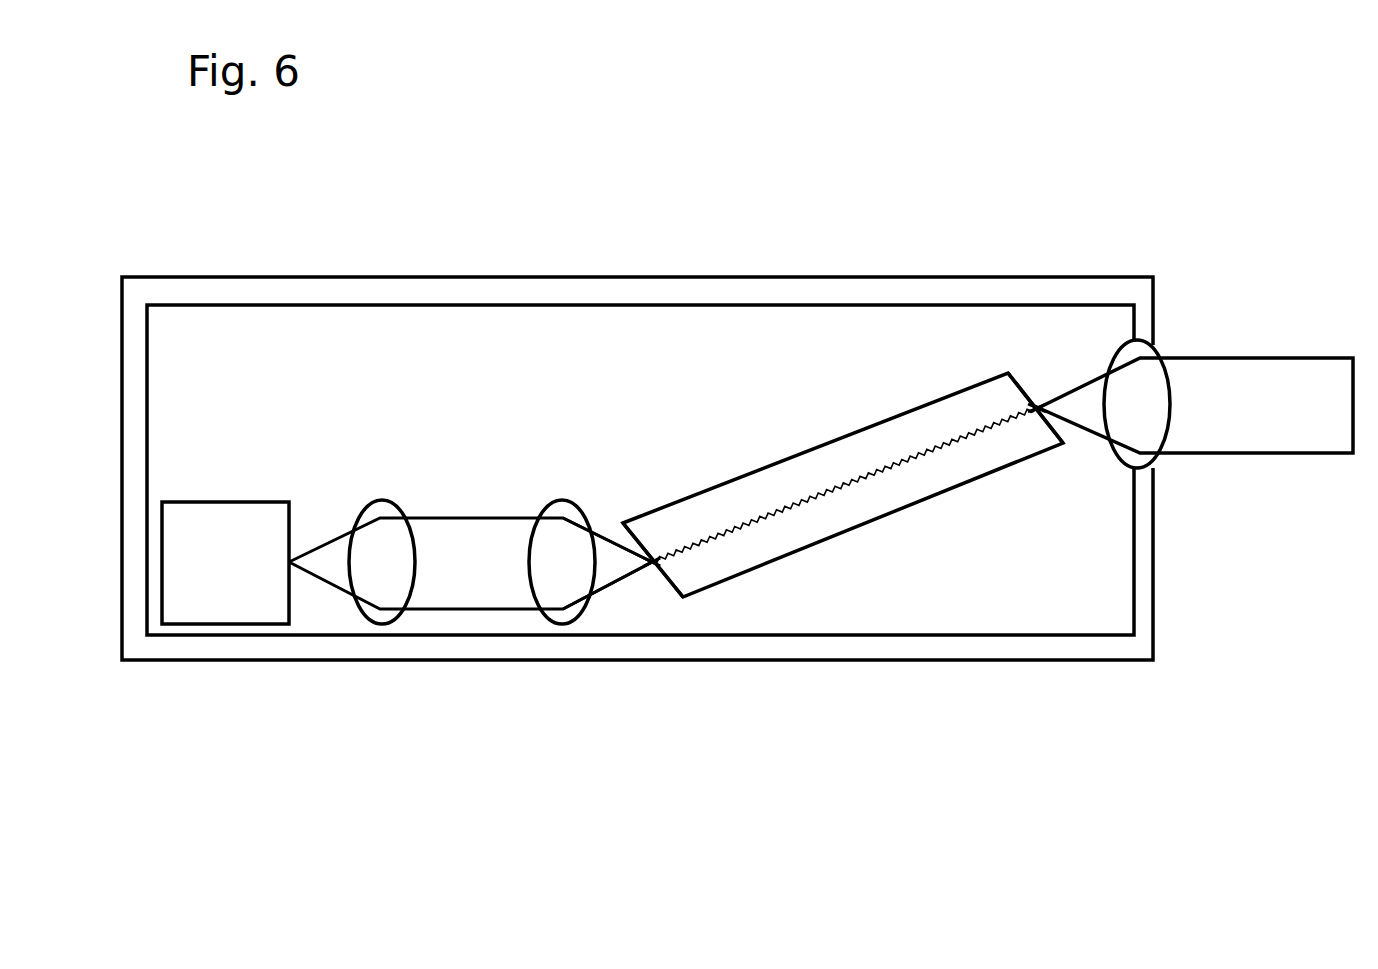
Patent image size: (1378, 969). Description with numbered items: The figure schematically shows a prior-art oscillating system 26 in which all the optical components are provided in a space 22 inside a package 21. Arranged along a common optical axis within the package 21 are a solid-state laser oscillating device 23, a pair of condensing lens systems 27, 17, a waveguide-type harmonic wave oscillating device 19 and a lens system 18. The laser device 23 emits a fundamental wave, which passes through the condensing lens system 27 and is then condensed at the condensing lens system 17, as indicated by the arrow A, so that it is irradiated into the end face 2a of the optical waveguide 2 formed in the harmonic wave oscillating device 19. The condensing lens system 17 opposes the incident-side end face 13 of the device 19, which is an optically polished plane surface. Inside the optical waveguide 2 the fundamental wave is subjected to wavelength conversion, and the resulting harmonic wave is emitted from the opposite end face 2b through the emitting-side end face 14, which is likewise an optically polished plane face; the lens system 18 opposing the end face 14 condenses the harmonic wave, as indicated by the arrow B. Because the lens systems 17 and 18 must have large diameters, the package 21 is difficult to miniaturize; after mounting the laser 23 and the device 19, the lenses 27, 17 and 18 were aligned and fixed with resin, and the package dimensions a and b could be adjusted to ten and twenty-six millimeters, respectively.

The oscillating system 26 is at (1173, 266).
The package 21 is at (1155, 295).
The space 22 is at (597, 394).
The solid-state laser oscillating device 23 is at (242, 514).
The condensing lens system 27 is at (380, 505).
The condensing lens system 17 is at (562, 504).
The waveguide-type harmonic wave oscillating device 19 is at (914, 398).
The incident-side end face 13 is at (636, 538).
The emitting-side end face 14 is at (1017, 378).
The optical waveguide 2 is at (807, 500).
The end face of the optical waveguide 2a is at (650, 568).
The end face of the optical waveguide 2b is at (1041, 403).
The lens system 18 is at (1147, 372).
The arrow indicating fundamental wave A is at (603, 547).
The arrow indicating harmonic wave B is at (1245, 455).
The package dimension a is at (94, 280).
The package dimension b is at (122, 250).